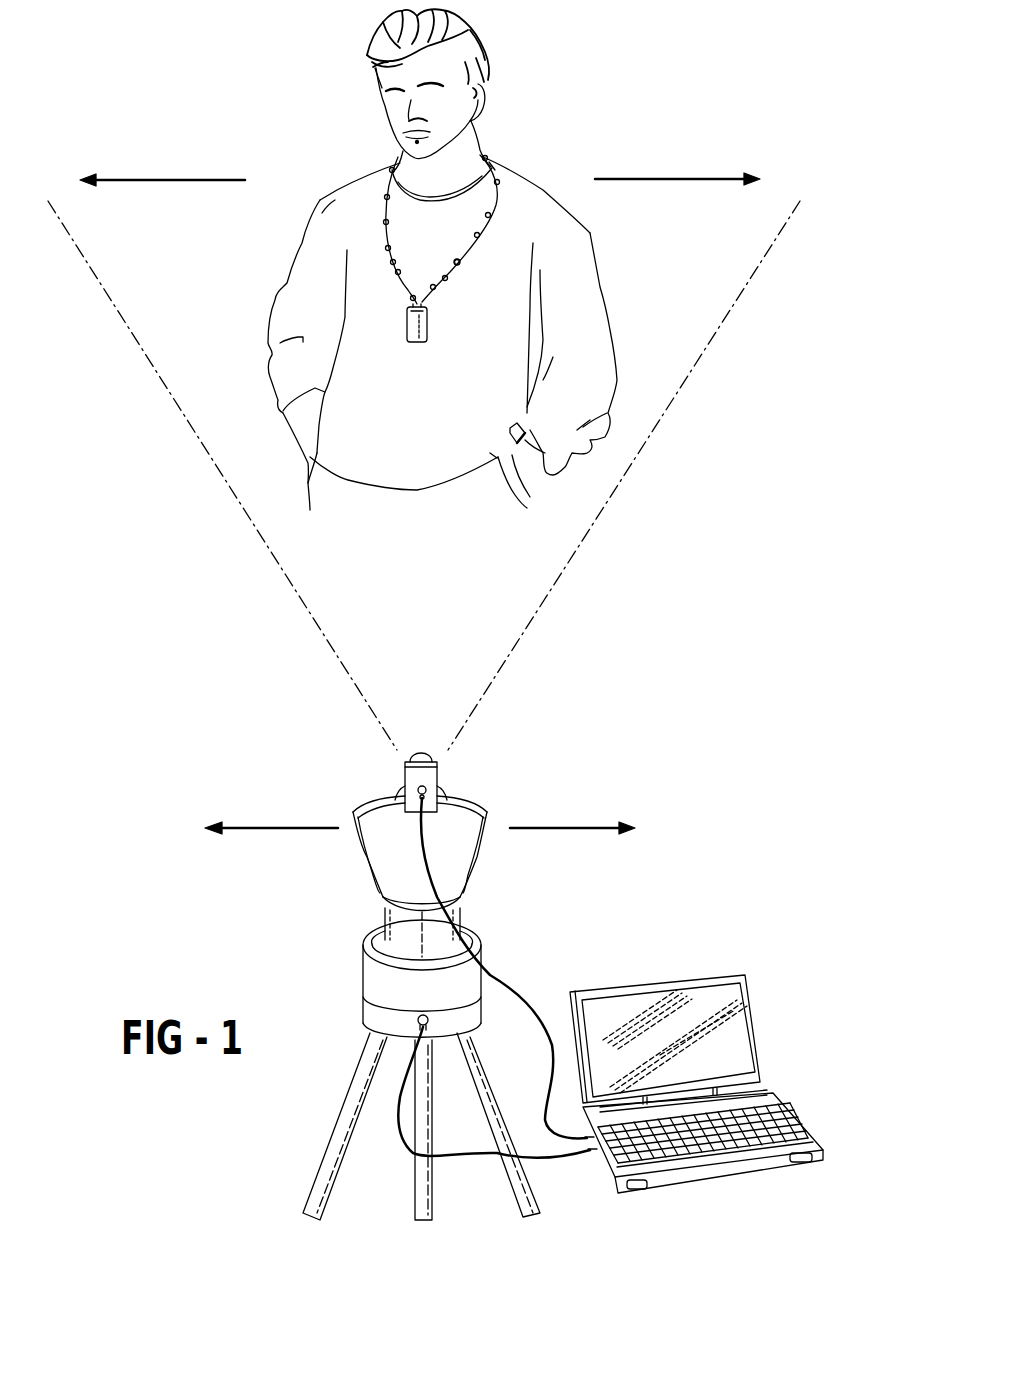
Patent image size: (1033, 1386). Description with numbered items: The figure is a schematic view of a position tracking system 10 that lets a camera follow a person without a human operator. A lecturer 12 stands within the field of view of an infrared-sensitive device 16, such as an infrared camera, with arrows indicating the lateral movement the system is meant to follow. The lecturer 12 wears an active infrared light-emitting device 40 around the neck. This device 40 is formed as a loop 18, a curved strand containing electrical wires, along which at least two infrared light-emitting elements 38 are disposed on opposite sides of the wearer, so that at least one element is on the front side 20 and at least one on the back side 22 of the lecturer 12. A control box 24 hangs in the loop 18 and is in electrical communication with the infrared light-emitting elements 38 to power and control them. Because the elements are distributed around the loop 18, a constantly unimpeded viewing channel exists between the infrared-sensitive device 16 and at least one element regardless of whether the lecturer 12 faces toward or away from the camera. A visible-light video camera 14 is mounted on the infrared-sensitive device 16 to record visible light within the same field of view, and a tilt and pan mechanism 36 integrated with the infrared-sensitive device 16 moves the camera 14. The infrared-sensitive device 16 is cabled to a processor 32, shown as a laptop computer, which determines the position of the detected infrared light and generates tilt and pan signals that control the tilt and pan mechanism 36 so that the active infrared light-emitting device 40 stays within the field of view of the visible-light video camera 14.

The position tracking system 10 is at (683, 914).
The lecturer 12 is at (622, 302).
The visible-light video camera 14 is at (430, 772).
The infrared-sensitive device 16 is at (388, 852).
The loop 18 is at (497, 202).
The front side 20 is at (427, 415).
The back side 22 is at (511, 167).
The control box 24 is at (423, 328).
The processor 32 is at (757, 1028).
The tilt and pan mechanism 36 is at (382, 984).
The infrared light-emitting elements 38 is at (464, 263).
The active infrared light-emitting device 40 is at (368, 209).